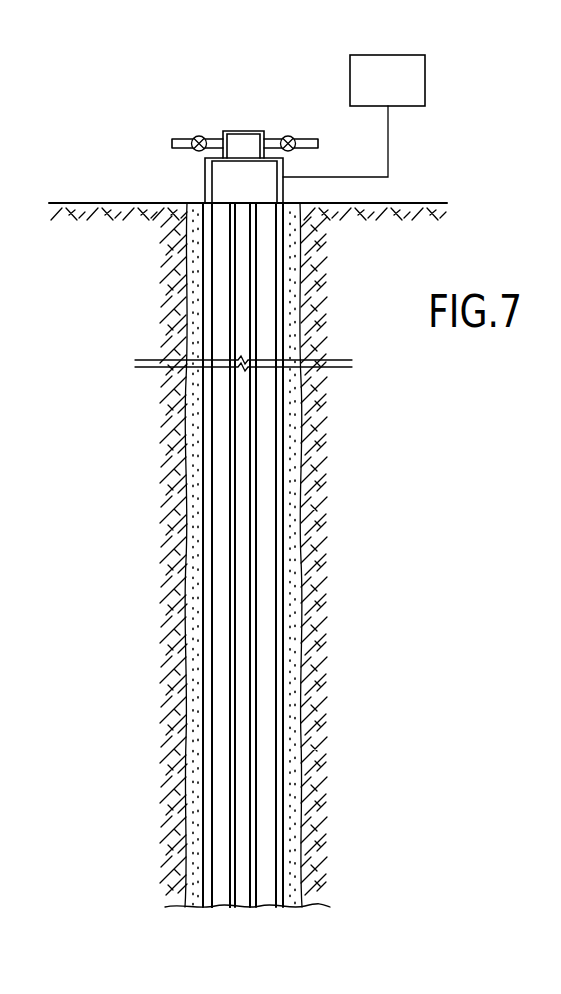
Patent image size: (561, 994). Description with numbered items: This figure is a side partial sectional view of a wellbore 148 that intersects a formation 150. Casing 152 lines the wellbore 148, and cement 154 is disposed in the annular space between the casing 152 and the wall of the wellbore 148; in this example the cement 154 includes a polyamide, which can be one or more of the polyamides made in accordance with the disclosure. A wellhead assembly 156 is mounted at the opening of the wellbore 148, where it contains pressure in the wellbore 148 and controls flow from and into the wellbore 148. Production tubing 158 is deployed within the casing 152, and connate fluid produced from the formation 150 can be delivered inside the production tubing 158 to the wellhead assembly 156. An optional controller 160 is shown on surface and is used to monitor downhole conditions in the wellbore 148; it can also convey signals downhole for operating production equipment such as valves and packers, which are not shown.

The wellbore 148 is at (220, 845).
The formation 150 is at (311, 711).
The casing 152 is at (285, 870).
The cement 154 is at (288, 815).
The wellhead assembly 156 is at (205, 175).
The production tubing 158 is at (237, 260).
The controller 160 is at (420, 78).